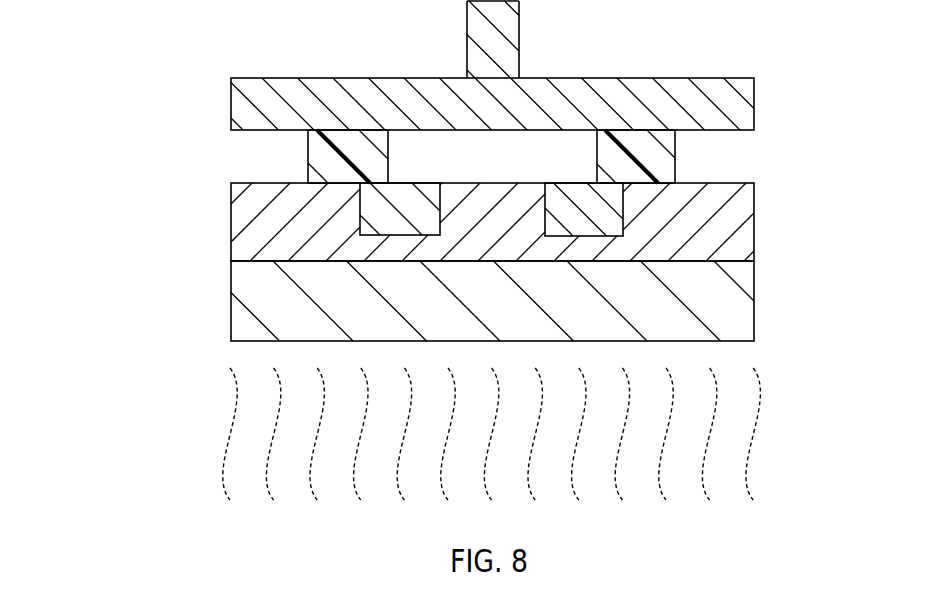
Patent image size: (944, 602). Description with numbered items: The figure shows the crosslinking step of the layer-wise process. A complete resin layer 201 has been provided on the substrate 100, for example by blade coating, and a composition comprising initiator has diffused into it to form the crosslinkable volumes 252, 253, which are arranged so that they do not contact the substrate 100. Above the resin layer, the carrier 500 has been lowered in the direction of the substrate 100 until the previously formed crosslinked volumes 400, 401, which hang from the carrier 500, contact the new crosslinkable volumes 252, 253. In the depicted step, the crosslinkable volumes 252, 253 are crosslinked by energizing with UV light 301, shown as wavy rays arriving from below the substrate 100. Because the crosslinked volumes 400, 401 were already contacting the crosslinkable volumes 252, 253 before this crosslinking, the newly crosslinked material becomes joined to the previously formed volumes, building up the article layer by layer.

The substrate 100 is at (252, 318).
The resin layer 201 is at (250, 233).
The crosslinkable volume 252 is at (372, 203).
The crosslinkable volume 253 is at (617, 200).
The UV light 301 is at (226, 449).
The crosslinked volume 400 is at (317, 147).
The crosslinked volume 401 is at (667, 150).
The carrier 500 is at (255, 108).